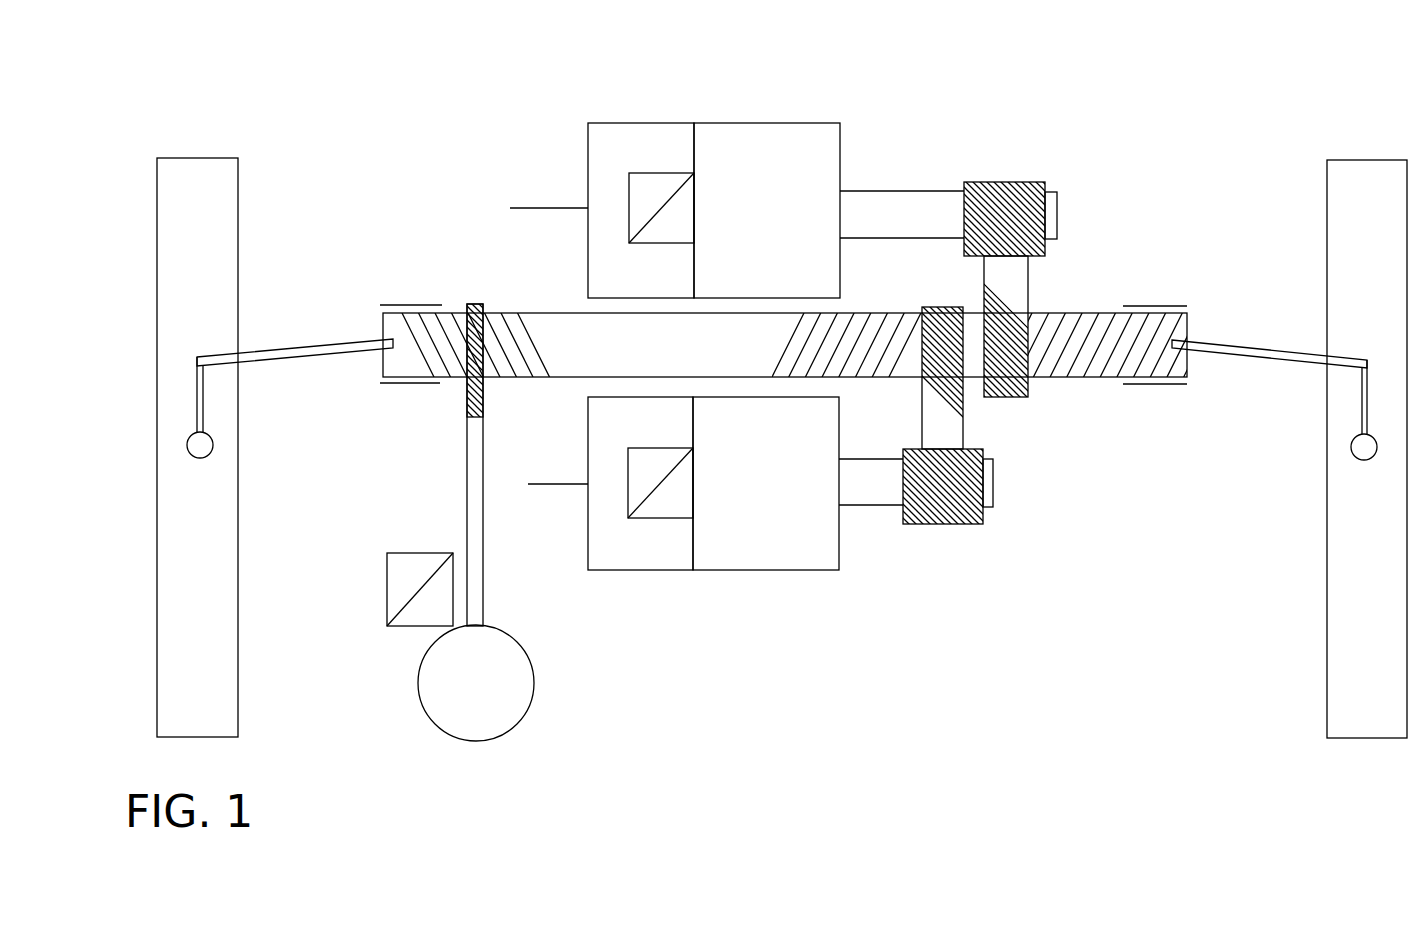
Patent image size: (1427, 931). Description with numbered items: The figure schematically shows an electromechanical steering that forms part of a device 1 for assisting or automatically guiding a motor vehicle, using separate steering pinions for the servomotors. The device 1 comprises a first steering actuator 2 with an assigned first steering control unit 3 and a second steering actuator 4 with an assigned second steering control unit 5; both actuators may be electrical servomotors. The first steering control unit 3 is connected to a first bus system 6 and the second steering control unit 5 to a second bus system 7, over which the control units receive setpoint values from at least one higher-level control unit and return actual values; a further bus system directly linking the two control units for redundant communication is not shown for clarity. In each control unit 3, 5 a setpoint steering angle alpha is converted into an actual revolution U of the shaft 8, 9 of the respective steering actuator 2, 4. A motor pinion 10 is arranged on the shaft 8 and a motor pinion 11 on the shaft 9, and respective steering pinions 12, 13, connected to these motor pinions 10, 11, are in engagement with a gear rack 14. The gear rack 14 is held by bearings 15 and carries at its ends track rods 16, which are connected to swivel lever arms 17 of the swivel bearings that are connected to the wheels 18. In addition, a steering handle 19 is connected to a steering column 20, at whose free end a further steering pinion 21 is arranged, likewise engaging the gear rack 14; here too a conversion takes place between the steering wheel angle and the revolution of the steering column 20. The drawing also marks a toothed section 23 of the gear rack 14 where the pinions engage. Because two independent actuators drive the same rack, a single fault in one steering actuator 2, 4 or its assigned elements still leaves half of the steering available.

The device 1 is at (975, 135).
The first steering actuator 2 is at (777, 143).
The first steering control unit 3 is at (654, 143).
The second steering actuator 4 is at (770, 558).
The second steering control unit 5 is at (637, 559).
The first bus system 6 is at (558, 208).
The second bus system 7 is at (545, 484).
The shaft 8 is at (880, 208).
The shaft 9 is at (867, 496).
The motor pinion 10 is at (1020, 208).
The motor pinion 11 is at (956, 515).
The steering pinion 12 is at (1010, 390).
The steering pinion 13 is at (939, 325).
The gear rack 14 is at (556, 327).
The bearings 15 is at (414, 305).
The track rods 16 is at (320, 345).
The swivel lever arms 17 is at (203, 403).
The wheels 18 is at (208, 519).
The steering handle 19 is at (515, 703).
The steering column 20 is at (476, 465).
The further steering pinion 21 is at (476, 386).
The toothed section of rack 23 is at (1073, 365).